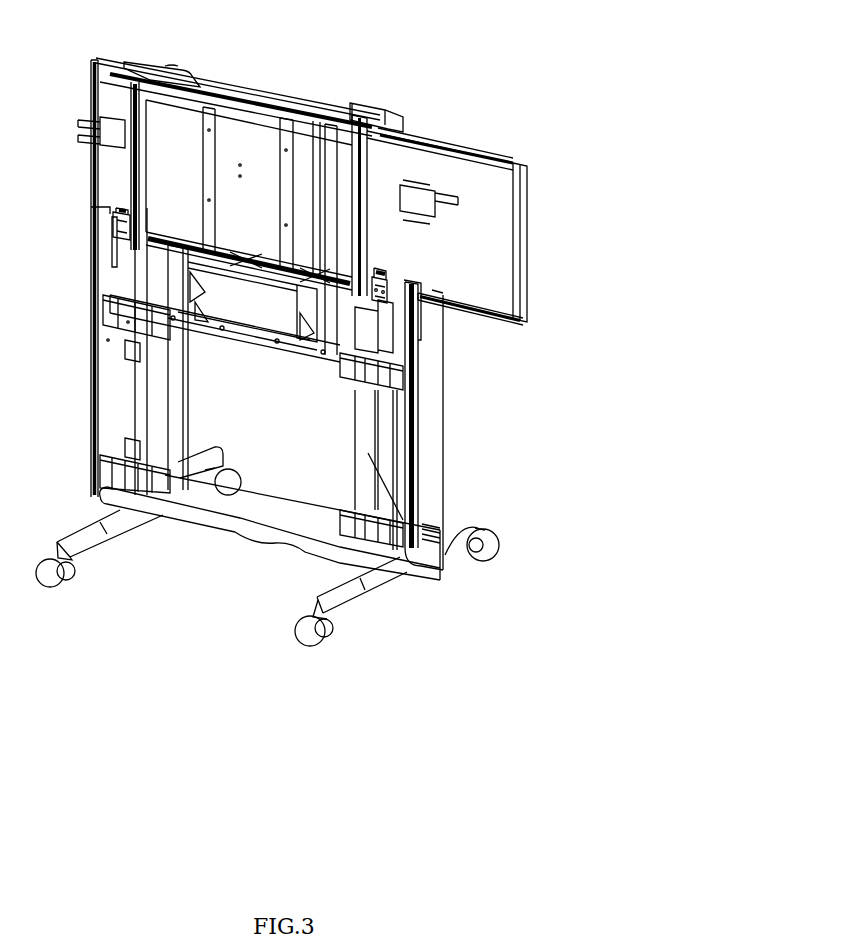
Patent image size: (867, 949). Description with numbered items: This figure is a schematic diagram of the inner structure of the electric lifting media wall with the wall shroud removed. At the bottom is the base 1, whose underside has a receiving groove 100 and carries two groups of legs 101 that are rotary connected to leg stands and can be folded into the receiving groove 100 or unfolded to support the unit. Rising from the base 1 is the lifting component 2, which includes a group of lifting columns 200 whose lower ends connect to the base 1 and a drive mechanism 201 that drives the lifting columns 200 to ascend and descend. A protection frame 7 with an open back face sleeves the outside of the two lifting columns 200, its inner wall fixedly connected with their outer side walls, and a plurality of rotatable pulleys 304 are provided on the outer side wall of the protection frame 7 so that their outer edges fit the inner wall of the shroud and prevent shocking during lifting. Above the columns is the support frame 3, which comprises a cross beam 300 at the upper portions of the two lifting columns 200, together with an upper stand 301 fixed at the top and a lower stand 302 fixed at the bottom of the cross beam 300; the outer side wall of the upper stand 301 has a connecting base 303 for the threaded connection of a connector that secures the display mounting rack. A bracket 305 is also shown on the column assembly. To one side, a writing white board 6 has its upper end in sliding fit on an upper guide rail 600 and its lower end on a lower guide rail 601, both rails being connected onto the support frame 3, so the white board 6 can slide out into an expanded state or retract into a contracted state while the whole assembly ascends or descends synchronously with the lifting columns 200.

The base 1 is at (243, 518).
The receiving groove 100 is at (308, 545).
The legs 101 is at (102, 535).
The lifting component 2 is at (147, 382).
The lifting columns 200 is at (417, 557).
The drive mechanism 201 is at (389, 295).
The support frame 3 is at (313, 338).
The cross beam 300 is at (226, 313).
The upper stand 301 is at (210, 140).
The lower stand 302 is at (250, 333).
The connecting base 303 is at (289, 207).
The pulleys 304 is at (122, 215).
The mounting bracket 305 is at (112, 297).
The writing white board 6 is at (447, 170).
The upper guide rail 600 is at (488, 153).
The lower guide rail 601 is at (490, 315).
The protection frame 7 is at (97, 347).